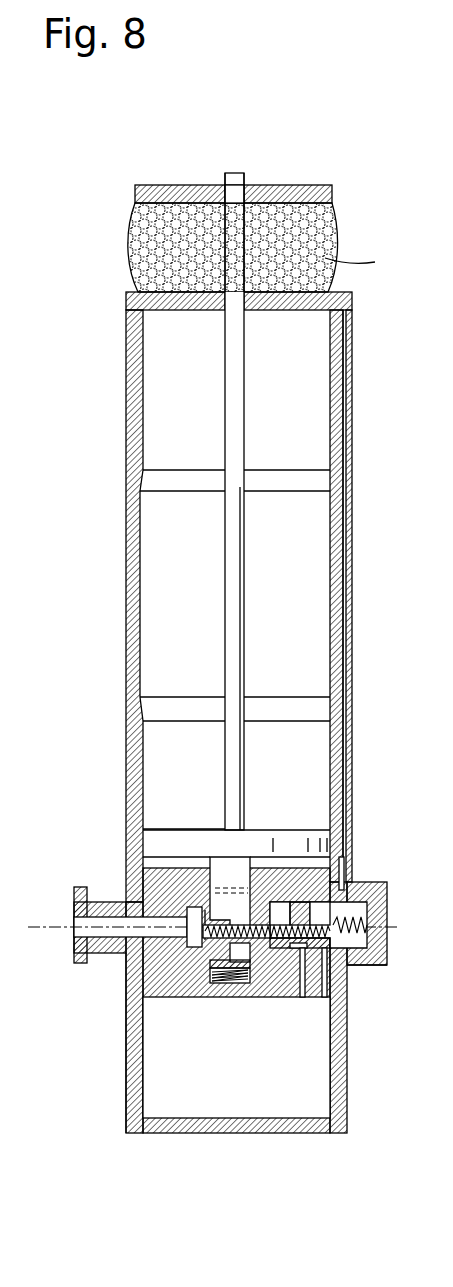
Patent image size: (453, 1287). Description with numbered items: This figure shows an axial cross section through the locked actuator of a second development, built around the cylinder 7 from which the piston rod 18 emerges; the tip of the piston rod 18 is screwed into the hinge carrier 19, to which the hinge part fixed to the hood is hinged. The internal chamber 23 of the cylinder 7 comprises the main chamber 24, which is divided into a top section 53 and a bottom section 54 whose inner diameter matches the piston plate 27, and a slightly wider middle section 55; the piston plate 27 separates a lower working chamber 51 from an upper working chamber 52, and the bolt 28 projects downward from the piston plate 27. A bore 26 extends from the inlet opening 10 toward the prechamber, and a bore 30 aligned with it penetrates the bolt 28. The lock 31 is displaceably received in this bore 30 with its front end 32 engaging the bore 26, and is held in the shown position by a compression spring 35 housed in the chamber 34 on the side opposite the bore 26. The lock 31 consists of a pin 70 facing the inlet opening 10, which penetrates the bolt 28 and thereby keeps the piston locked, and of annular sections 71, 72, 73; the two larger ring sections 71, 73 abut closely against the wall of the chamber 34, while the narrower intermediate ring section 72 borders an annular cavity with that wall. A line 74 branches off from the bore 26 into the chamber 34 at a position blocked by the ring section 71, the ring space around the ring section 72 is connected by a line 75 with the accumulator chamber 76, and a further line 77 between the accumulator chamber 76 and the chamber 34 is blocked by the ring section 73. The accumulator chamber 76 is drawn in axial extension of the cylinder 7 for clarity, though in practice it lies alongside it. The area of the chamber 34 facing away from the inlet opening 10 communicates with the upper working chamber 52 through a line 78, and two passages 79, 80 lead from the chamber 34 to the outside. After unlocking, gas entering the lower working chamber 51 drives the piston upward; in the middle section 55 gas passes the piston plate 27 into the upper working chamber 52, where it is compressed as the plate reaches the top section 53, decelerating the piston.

The cylinder 7 is at (114, 453).
The inlet opening 10 is at (76, 918).
The piston rod 18 is at (235, 420).
The hinge carrier 19 is at (305, 185).
The internal chamber 23 is at (305, 772).
The main chamber 24 is at (160, 735).
The bore 26 is at (132, 937).
The piston plate 27 is at (157, 845).
The bolt 28 is at (157, 862).
The bore 30 is at (220, 877).
The lock 31 is at (298, 904).
The front end 32 is at (160, 950).
The chamber 34 is at (357, 942).
The compression spring 35 is at (372, 890).
The lower working chamber 51 is at (150, 862).
The upper working chamber 52 is at (312, 334).
The top section 53 is at (212, 387).
The bottom section 54 is at (207, 804).
The middle section 55 is at (217, 619).
The pin 70 is at (255, 983).
The ring section 71 is at (278, 963).
The ring section 72 is at (310, 867).
The ring section 73 is at (342, 868).
The line 74 is at (257, 868).
The line 75 is at (302, 975).
The accumulator chamber 76 is at (243, 1104).
The line 77 is at (325, 997).
The line 78 is at (343, 756).
The passage 79 is at (352, 964).
The passage 80 is at (370, 926).